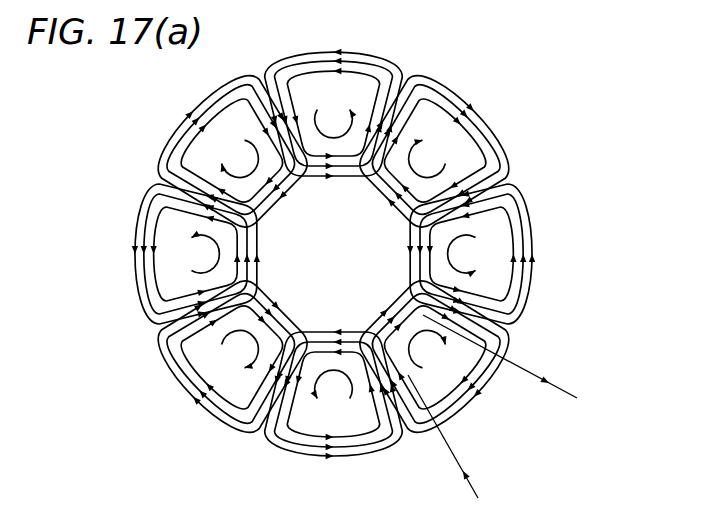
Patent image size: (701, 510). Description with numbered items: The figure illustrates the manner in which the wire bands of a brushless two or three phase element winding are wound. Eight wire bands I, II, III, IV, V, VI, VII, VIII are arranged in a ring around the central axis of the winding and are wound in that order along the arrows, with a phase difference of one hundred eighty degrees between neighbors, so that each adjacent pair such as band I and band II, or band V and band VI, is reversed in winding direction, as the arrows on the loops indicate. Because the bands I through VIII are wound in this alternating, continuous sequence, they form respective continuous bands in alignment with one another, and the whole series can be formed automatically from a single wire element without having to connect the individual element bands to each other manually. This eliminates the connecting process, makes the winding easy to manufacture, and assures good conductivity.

The wire band I is at (457, 418).
The wire band II is at (317, 455).
The wire band III is at (173, 380).
The wire band IV is at (138, 230).
The wire band V is at (225, 90).
The wire band VI is at (353, 53).
The wire band VII is at (487, 120).
The wire band VIII is at (532, 275).